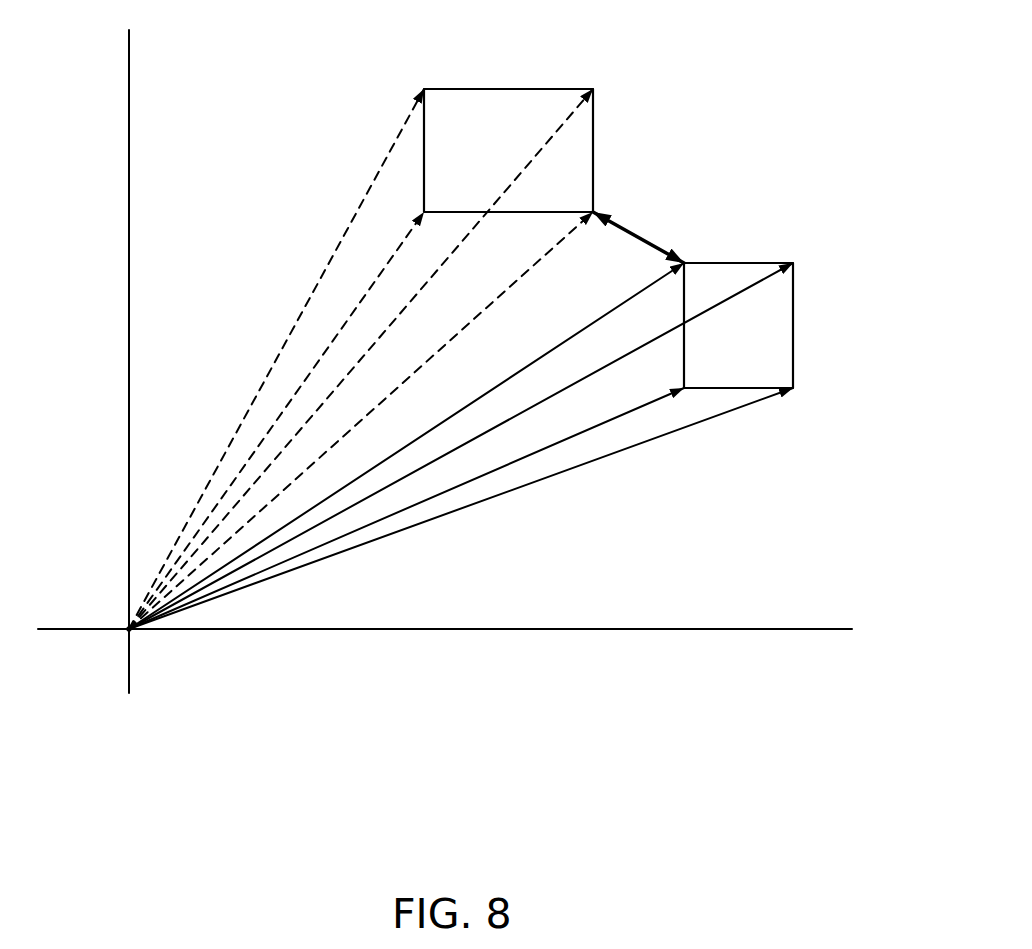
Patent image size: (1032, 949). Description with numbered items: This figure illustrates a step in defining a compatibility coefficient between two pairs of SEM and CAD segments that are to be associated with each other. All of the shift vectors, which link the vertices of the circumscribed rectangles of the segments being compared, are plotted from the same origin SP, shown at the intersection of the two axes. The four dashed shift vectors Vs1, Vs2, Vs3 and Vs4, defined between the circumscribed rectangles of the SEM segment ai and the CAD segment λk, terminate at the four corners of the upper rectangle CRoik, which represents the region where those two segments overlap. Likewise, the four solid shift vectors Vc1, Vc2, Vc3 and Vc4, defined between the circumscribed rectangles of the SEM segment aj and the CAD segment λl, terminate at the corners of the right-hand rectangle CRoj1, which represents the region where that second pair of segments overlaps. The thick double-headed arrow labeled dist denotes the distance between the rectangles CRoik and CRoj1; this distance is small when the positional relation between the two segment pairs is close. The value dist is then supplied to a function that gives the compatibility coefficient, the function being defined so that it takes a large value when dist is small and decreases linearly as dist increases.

The rectangle representing overlap region of SEM segment ai and CAD segment λk CRoik is at (493, 88).
The rectangle representing overlap region of SEM segment aj and CAD segment λl CRoj1 is at (793, 313).
The distance between rectangles dist is at (640, 232).
The shift vector Vs1 is at (257, 395).
The shift vector Vs2 is at (327, 347).
The shift vector Vs3 is at (393, 320).
The shift vector Vs4 is at (480, 313).
The shift vector Vc1 is at (608, 313).
The shift vector Vc2 is at (572, 387).
The shift vector Vc3 is at (552, 447).
The shift vector Vc4 is at (493, 498).
The origin SP is at (129, 630).